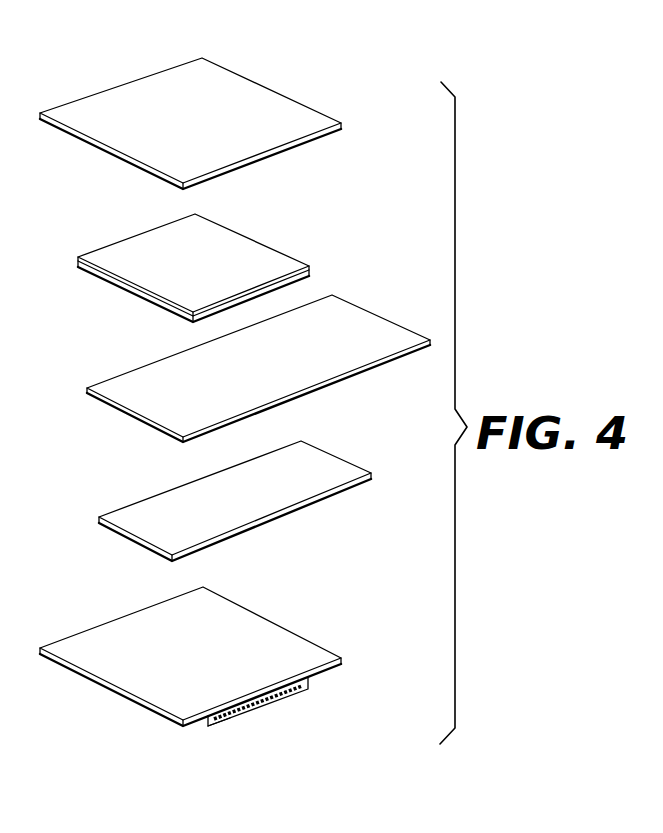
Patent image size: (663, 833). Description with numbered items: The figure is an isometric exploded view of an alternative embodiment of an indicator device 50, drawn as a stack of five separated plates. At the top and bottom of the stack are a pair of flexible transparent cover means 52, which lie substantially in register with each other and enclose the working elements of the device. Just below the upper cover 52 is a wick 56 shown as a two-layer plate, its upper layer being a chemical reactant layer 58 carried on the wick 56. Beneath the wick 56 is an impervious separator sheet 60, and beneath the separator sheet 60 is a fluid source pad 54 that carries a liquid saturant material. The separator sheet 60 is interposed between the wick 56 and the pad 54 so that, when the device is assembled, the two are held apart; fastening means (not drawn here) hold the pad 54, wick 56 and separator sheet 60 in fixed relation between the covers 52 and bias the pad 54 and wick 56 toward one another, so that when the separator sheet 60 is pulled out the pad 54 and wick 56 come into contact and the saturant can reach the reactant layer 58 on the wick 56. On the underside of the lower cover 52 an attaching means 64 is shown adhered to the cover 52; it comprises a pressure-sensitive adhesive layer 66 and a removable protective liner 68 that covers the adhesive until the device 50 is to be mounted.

The indicator device 50 is at (286, 72).
The flexible transparent cover means 52 is at (80, 108).
The fluid source pad 54 is at (333, 472).
The wick 56 is at (113, 283).
The chemical reactant layer 58 is at (126, 250).
The impervious separator sheet 60 is at (122, 393).
The attaching means 64 is at (235, 726).
The pressure-sensitive adhesive layer 66 is at (312, 678).
The removable protective liner 68 is at (275, 698).